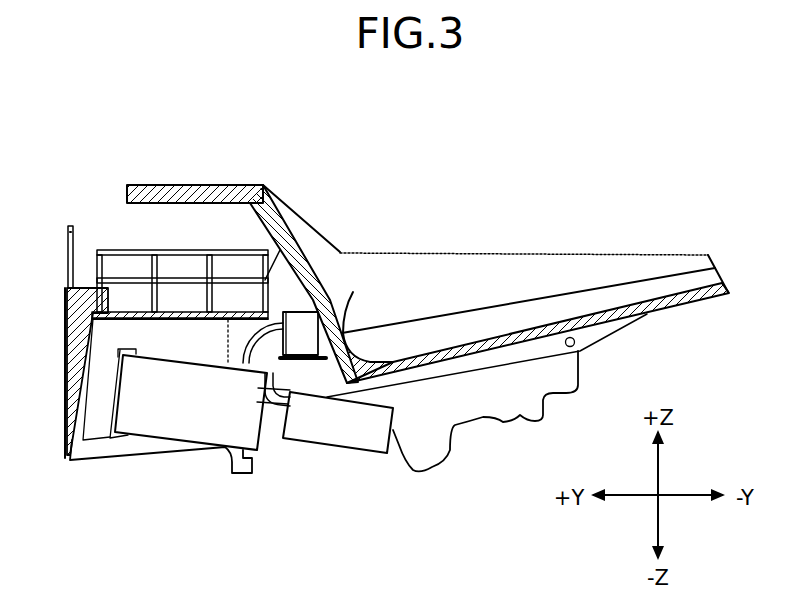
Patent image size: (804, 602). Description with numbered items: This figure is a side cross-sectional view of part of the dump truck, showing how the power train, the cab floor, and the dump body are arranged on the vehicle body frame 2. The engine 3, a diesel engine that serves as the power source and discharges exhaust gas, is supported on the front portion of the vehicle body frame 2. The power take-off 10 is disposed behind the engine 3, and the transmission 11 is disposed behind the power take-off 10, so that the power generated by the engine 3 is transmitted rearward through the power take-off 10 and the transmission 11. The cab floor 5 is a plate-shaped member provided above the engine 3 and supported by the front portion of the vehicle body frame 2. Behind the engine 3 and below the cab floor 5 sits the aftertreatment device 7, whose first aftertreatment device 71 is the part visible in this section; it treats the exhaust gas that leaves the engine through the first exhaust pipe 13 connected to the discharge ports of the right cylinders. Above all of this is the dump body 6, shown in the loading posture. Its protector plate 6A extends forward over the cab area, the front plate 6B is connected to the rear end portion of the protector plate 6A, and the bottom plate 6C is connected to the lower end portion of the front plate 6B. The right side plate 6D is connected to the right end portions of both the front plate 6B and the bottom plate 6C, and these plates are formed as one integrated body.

The vehicle body frame 2 is at (460, 400).
The engine 3 is at (175, 415).
The cab floor 5 is at (133, 316).
The dump body 6 is at (428, 235).
The protector plate 6A is at (217, 186).
The front plate 6B is at (353, 292).
The bottom plate 6C is at (577, 320).
The right side plate 6D is at (430, 280).
The aftertreatment device 7 is at (300, 333).
The first aftertreatment device 71 is at (301, 322).
The power take-off 10 is at (277, 413).
The transmission 11 is at (337, 433).
The first exhaust pipe 13 is at (262, 317).